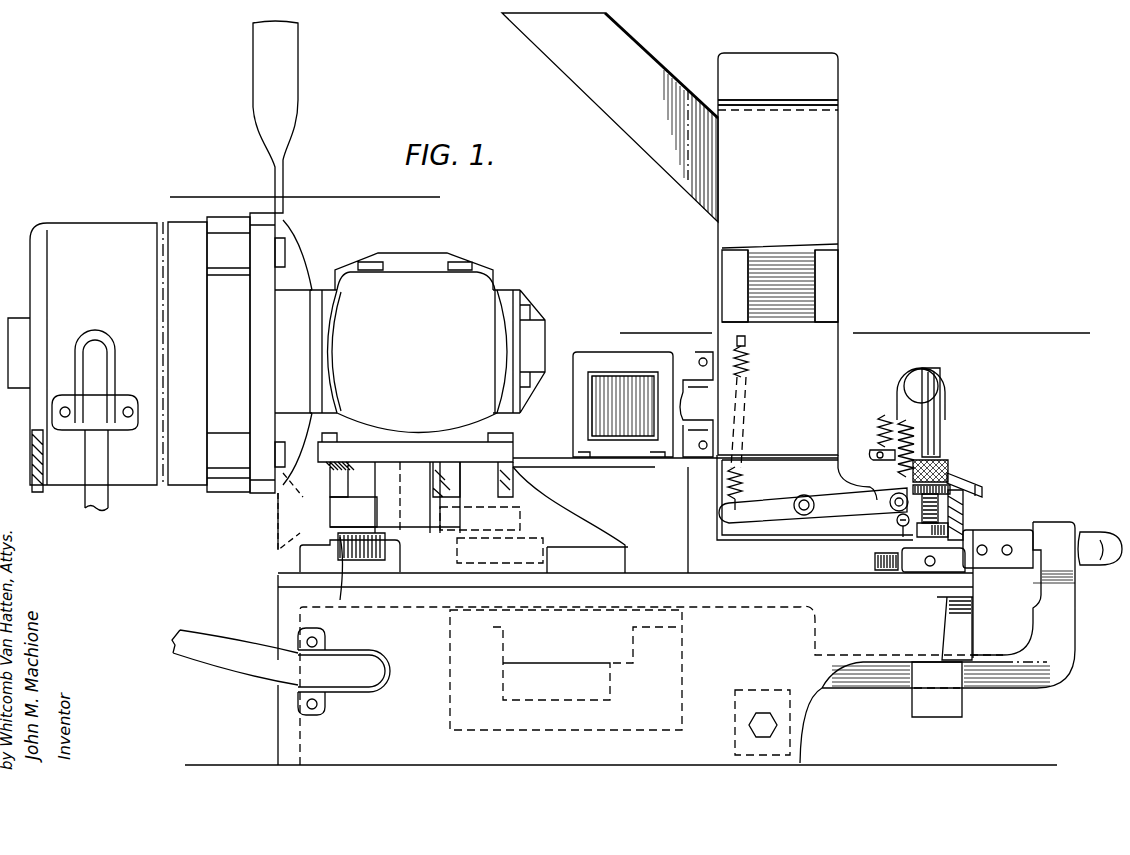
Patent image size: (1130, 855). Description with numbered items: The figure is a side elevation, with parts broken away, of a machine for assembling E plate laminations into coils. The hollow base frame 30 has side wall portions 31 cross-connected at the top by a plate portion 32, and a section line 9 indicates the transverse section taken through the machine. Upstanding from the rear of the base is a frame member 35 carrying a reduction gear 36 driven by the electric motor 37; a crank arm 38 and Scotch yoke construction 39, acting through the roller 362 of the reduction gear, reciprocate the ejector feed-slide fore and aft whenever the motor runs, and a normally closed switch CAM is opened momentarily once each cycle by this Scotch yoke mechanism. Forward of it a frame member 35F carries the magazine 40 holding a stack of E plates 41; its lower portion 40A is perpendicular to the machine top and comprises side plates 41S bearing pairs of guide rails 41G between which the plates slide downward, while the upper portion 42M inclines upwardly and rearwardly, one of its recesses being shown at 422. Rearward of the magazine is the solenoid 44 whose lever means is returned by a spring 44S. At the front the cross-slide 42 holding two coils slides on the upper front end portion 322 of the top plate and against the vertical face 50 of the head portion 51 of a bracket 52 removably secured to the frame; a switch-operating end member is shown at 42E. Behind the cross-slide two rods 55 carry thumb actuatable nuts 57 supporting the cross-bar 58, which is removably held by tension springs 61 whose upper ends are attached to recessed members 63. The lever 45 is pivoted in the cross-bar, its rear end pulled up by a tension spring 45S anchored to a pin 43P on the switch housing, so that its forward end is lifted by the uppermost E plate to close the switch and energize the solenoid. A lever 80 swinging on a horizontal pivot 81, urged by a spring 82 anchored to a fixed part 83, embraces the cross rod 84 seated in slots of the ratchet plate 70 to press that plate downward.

The section line 9- 9 is at (190, 203).
The base frame 30 is at (267, 726).
The side wall portions 31 is at (380, 726).
The plate portion 32 is at (410, 605).
The frame member 35 is at (268, 523).
The frame member 35F is at (782, 566).
The reduction gear 36 is at (490, 306).
The roller 362 is at (365, 595).
The electric motor 37 is at (109, 216).
The crank arm 38 is at (372, 526).
The Scotch yoke construction 39 is at (297, 566).
The magazine 40 is at (852, 245).
The lower portion of magazine 40A is at (812, 404).
The E plates 41 is at (790, 265).
The guide rails 41G is at (738, 275).
The side plates 41S is at (840, 85).
The cross-slide 42 is at (1021, 537).
The recess 422 is at (612, 68).
The upper portion of magazine 42M is at (640, 158).
The blade edge 42E is at (1104, 565).
The pin 43P is at (890, 420).
The solenoid 44 is at (584, 351).
The spring 44S is at (683, 465).
The lever 45 is at (978, 480).
The tension spring 45S is at (878, 432).
The vertical face 50 is at (1045, 525).
The head portion 51 is at (1078, 530).
The bracket 52 is at (995, 660).
The rods 55 is at (928, 395).
The thumb actuatable nuts 57 is at (950, 455).
The cross-bar 58 is at (950, 435).
The tension springs 61 is at (920, 405).
The members 63 is at (905, 370).
The ratchet plate 70 is at (976, 503).
The lever 80 is at (766, 502).
The horizontal pivot 81 is at (806, 496).
The spring 82 is at (748, 362).
The fixed part 83 is at (746, 340).
The rod 84 is at (870, 503).
The upper front end portion 322 is at (973, 572).
The switch CAM is at (600, 555).